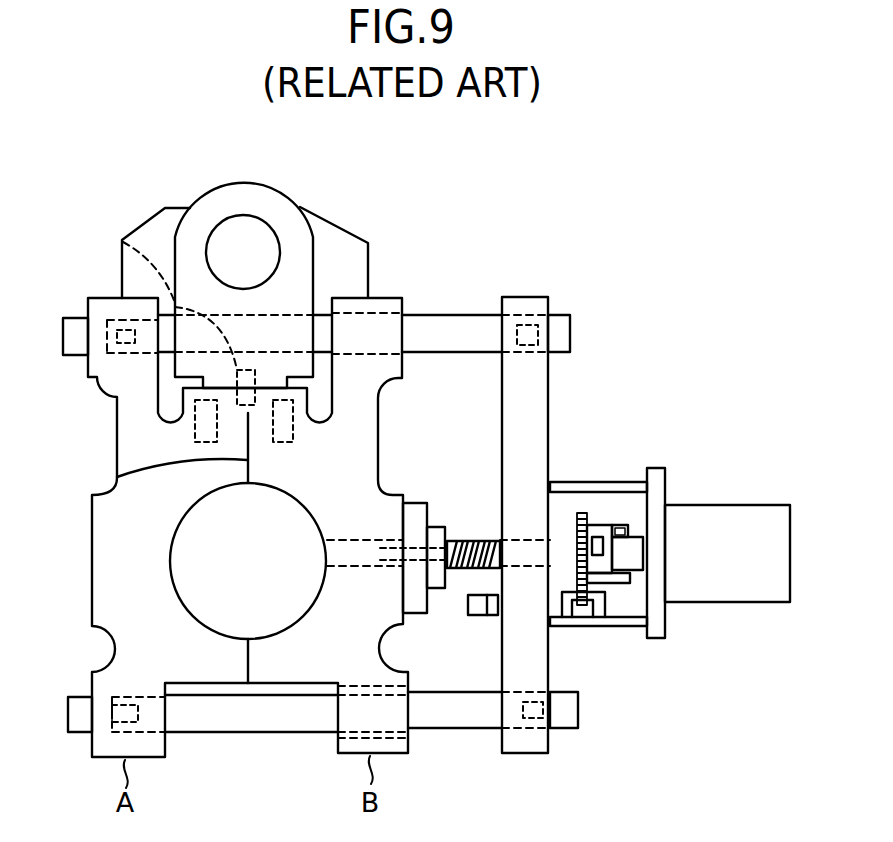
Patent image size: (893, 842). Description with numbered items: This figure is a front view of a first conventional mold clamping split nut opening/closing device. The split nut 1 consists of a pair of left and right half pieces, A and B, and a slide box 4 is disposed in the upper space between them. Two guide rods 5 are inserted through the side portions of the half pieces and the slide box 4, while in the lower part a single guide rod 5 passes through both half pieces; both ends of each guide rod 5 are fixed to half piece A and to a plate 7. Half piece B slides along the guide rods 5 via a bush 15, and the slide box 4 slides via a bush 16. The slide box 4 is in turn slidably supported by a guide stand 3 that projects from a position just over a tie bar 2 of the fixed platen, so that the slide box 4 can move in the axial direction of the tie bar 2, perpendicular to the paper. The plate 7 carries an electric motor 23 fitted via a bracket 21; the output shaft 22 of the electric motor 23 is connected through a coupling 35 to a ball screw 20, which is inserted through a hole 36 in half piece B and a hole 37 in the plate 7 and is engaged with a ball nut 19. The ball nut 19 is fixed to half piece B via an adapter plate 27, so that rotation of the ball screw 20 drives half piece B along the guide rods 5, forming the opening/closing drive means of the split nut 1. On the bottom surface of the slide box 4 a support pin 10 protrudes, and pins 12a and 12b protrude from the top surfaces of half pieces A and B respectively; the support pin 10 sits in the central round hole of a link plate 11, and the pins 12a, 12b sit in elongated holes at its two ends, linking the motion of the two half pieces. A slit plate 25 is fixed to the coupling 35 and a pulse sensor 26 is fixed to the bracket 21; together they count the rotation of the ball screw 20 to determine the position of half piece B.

The split nut 1 is at (92, 523).
The tie bar 2 is at (187, 568).
The guide stand 3 is at (232, 233).
The slide box 4 is at (285, 190).
The guide rod 5 is at (445, 313).
The plate 7 is at (523, 297).
The support pin 10 is at (157, 297).
The link plate 11 is at (157, 400).
The pin 12a is at (197, 438).
The pin 12b is at (293, 431).
The bush 15 is at (378, 305).
The bush 16 is at (122, 240).
The ball nut 19 is at (430, 530).
The ball screw 20 is at (468, 540).
The bracket 21 is at (608, 482).
The output shaft 22 is at (648, 562).
The electric motor 23 is at (760, 588).
The slit plate 25 is at (548, 585).
The pulse sensor 26 is at (597, 617).
The adapter plate 27 is at (410, 503).
The coupling 35 is at (590, 525).
The hole 36 is at (343, 570).
The hole 37 is at (517, 567).